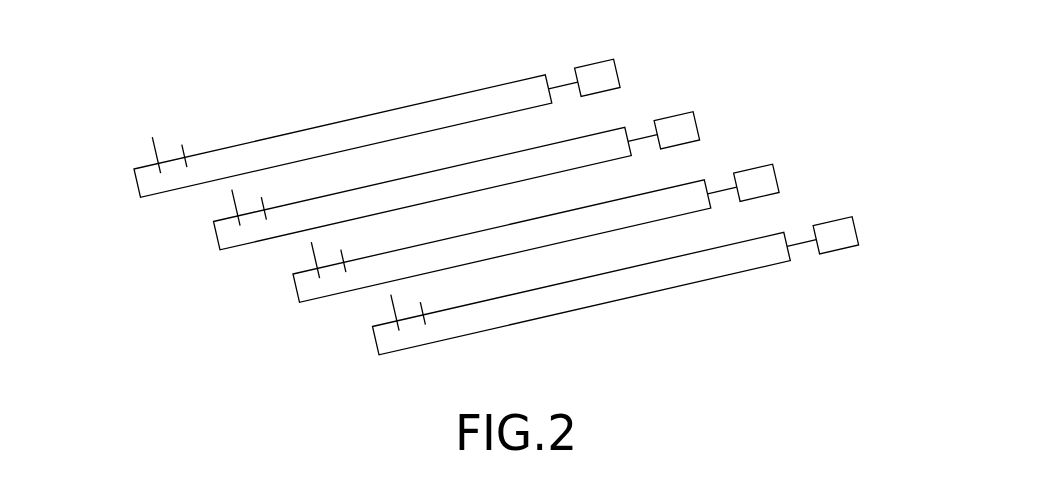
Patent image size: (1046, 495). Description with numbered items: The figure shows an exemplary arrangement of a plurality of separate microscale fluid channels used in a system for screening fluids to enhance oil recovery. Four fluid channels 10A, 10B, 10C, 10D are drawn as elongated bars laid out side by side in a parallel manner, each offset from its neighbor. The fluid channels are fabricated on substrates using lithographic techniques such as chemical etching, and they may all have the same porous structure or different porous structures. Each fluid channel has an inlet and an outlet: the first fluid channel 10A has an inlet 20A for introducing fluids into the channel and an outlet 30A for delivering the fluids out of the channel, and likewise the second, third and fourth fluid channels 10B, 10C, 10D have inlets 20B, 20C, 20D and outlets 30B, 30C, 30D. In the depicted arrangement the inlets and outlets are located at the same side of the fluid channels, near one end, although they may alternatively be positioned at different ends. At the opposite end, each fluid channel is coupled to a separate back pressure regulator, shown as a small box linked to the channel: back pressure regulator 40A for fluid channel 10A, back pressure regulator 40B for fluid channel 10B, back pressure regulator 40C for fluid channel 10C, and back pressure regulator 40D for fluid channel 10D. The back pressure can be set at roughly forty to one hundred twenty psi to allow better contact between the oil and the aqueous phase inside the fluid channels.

The fluid channel 10A is at (137, 196).
The inlet 20A is at (156, 151).
The outlet 30A is at (182, 145).
The back pressure regulator 40A is at (614, 60).
The fluid channel 10B is at (216, 248).
The inlet 20B is at (235, 203).
The outlet 30B is at (261, 197).
The back pressure regulator 40B is at (693, 113).
The fluid channel 10C is at (296, 301).
The inlet 20C is at (314, 256).
The outlet 30C is at (341, 250).
The back pressure regulator 40C is at (773, 165).
The fluid channel 10D is at (376, 354).
The inlet 20D is at (394, 308).
The outlet 30D is at (420, 302).
The back pressure regulator 40D is at (852, 218).